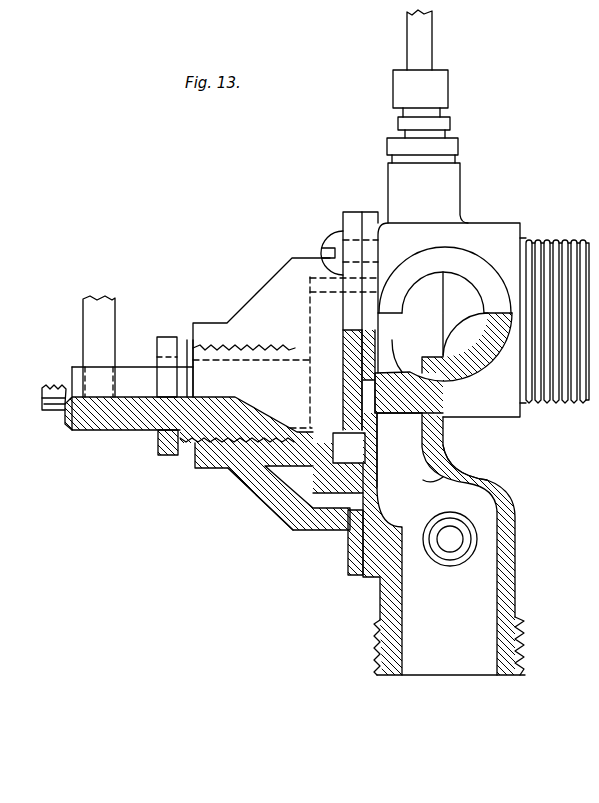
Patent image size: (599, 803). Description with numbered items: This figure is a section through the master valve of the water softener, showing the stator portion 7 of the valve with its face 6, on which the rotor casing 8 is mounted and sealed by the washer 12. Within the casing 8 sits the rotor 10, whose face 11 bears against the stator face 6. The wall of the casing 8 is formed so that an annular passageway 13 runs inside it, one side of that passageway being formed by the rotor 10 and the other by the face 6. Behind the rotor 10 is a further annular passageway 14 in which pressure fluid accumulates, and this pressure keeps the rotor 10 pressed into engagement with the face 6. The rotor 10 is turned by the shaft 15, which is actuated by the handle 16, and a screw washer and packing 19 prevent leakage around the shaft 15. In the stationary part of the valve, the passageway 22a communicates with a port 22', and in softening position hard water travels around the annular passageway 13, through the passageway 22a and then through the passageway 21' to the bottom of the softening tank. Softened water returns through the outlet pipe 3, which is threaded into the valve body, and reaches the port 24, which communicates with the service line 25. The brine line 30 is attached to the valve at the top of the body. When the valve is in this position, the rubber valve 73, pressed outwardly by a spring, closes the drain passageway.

The brine line 30 is at (410, 35).
The face 6 is at (352, 210).
The stator portion 7 is at (370, 212).
The service line 25 is at (468, 258).
The outlet pipe 3 is at (545, 236).
The rotor casing 8 is at (256, 294).
The handle 16 is at (106, 296).
The screw washer and packing 19 is at (167, 337).
The shaft 15 is at (72, 372).
The rotor face 11 is at (352, 360).
The rubber valve 73 is at (335, 433).
The port 24 is at (424, 390).
The port 22' is at (394, 450).
The passageway 22a is at (453, 467).
The annular passageway 14 is at (282, 473).
The rotor 10 is at (282, 505).
The annular passageway 13 is at (297, 532).
The washer 12 is at (350, 537).
The passageway 21' is at (444, 558).